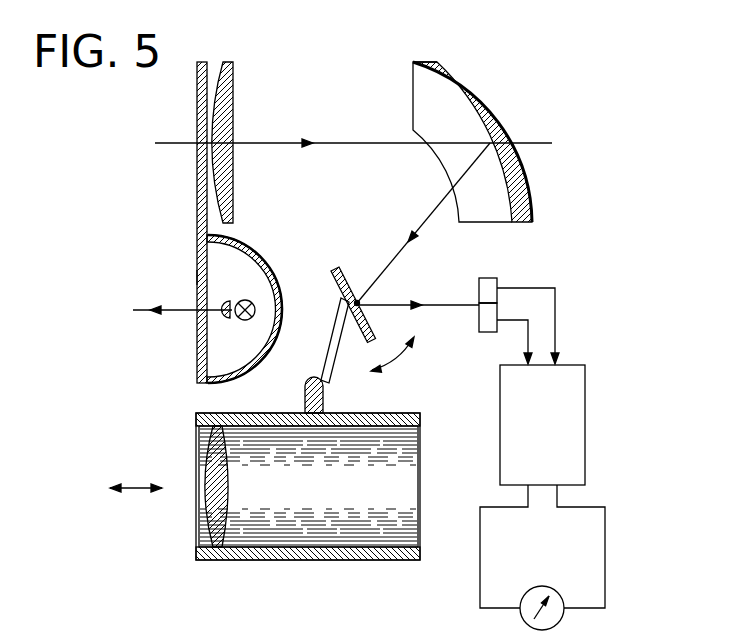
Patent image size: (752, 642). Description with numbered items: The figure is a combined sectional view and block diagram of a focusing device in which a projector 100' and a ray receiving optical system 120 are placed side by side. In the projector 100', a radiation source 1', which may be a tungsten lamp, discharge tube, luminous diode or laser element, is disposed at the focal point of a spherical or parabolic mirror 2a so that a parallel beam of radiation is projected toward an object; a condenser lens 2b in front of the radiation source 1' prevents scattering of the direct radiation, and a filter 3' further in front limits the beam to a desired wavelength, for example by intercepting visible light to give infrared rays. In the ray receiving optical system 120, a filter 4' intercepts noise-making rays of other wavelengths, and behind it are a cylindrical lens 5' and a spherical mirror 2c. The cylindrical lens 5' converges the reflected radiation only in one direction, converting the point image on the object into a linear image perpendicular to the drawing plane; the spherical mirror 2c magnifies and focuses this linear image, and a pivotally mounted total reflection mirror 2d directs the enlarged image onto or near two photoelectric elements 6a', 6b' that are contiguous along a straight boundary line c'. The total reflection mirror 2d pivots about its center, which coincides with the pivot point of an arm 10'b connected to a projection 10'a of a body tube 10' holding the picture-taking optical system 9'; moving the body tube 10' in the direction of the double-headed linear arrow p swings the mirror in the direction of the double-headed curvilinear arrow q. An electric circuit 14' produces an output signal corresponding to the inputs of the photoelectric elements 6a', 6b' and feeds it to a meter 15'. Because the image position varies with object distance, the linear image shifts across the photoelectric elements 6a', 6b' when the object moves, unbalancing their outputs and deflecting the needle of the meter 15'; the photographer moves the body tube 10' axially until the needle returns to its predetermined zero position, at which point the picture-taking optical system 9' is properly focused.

The ray receiving optical system 120 is at (330, 118).
The filter 4' is at (178, 222).
The cylindrical lens 5' is at (245, 141).
The filter 3' is at (179, 265).
The spherical or parabolic mirror 2a is at (262, 256).
The radiation source 1' is at (237, 326).
The condenser lens 2b is at (224, 300).
The projector 100' is at (274, 379).
The spherical mirror 2c is at (472, 91).
The total reflection mirror 2d is at (337, 268).
The arm 10'b is at (316, 340).
The projection 10'a is at (352, 395).
The double-headed curvilinear arrow q is at (392, 359).
The body tube 10' is at (308, 514).
The picture-taking optical system 9' is at (192, 486).
The double-headed linear arrow p is at (126, 486).
The photoelectric element 6a' is at (519, 298).
The photoelectric element 6b' is at (497, 341).
The boundary line c' is at (473, 323).
The electric circuit 14' is at (575, 425).
The meter 15' is at (548, 563).